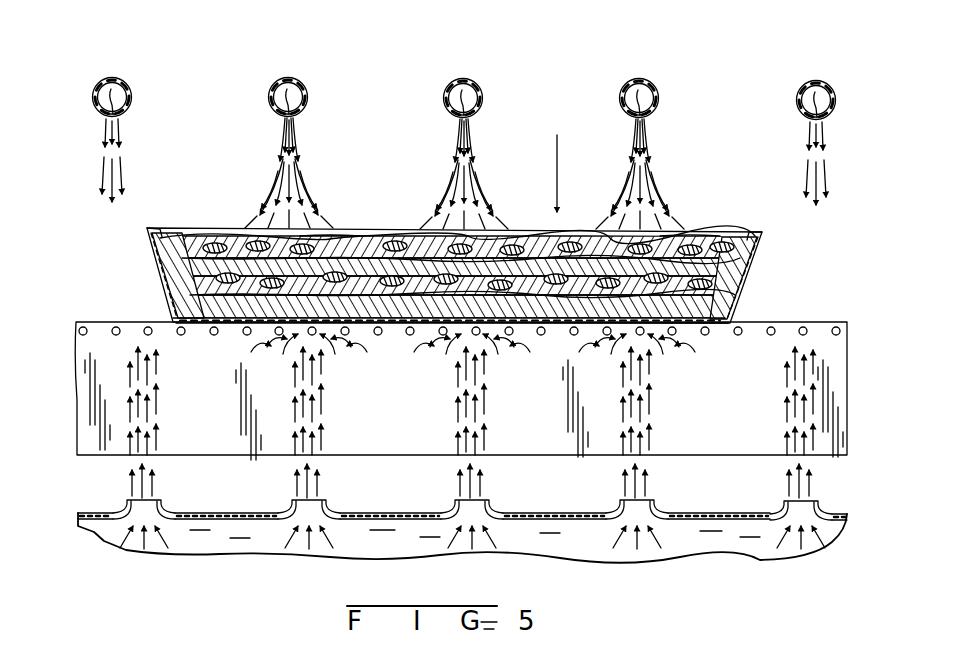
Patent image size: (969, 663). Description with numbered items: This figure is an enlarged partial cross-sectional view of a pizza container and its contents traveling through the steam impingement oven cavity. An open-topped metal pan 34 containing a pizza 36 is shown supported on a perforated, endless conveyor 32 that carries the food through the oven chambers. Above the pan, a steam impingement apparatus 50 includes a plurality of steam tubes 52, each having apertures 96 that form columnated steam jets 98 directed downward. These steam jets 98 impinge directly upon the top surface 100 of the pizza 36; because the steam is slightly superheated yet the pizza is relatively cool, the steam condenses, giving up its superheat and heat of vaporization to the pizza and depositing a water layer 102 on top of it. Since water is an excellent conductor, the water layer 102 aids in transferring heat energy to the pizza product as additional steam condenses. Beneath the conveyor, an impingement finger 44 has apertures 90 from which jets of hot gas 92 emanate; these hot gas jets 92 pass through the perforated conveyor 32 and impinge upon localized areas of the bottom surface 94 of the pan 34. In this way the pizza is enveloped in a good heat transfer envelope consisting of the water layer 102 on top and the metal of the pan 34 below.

The steam impingement apparatus 50 is at (736, 52).
The steam tube 52 is at (114, 77).
The aperture 96 is at (116, 112).
The steam jet 98 is at (126, 170).
The pizza 36 is at (552, 161).
The pan 34 is at (748, 274).
The water layer 102 is at (350, 226).
The top surface 100 is at (707, 234).
The bottom surface 94 is at (232, 328).
The conveyor 32 is at (117, 335).
The jet of hot gas 92 is at (158, 404).
The aperture 90 is at (151, 498).
The finger 44 is at (259, 548).